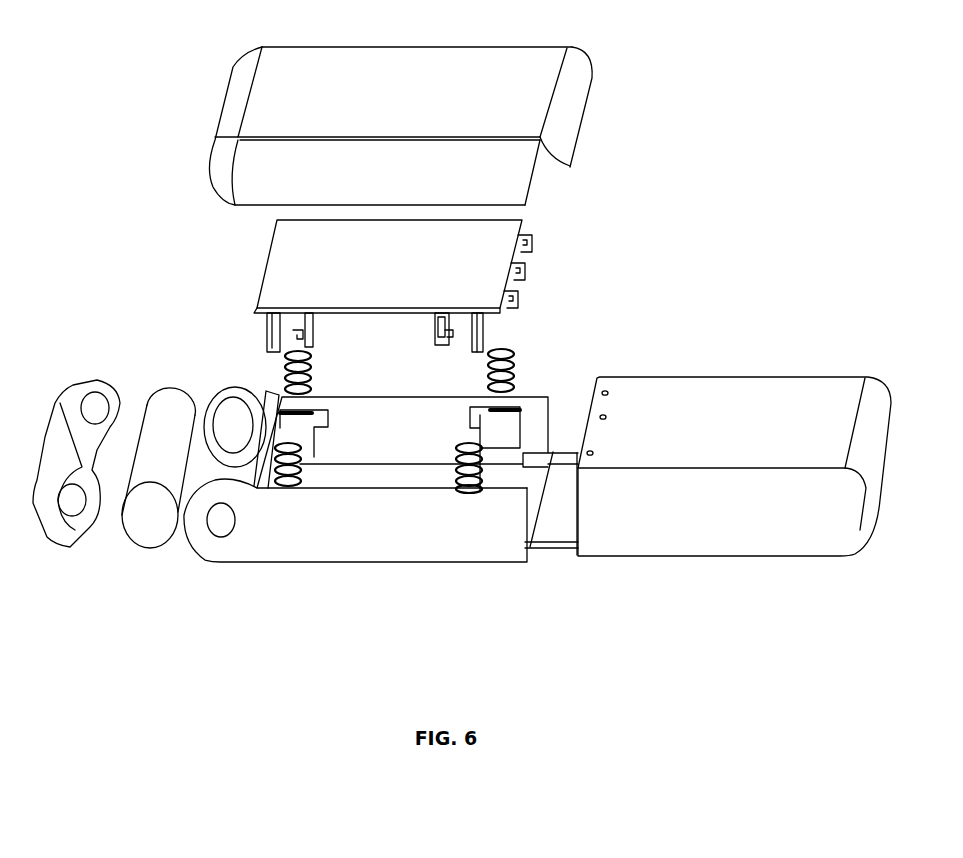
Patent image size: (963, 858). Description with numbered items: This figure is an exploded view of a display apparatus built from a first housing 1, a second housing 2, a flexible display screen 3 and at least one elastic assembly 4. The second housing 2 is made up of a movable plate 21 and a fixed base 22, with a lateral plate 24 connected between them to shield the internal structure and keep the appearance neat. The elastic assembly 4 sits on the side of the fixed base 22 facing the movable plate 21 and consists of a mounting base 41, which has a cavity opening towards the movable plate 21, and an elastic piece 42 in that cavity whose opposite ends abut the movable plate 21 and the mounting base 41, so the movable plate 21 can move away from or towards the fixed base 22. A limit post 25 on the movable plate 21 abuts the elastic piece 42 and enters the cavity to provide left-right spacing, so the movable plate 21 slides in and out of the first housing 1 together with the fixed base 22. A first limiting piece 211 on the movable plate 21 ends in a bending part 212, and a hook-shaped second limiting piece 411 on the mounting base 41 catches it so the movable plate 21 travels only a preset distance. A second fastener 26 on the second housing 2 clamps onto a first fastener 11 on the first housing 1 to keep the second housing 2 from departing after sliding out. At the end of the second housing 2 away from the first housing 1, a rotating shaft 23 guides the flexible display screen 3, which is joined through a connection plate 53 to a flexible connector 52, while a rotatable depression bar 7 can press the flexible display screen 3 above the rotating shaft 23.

The first housing 1 is at (734, 426).
The first fastener 11 is at (607, 418).
The second housing 2 is at (187, 208).
The movable plate 21 is at (280, 278).
The first limiting piece 211 is at (453, 310).
The bending part 212 is at (440, 346).
The fixed base 22 is at (333, 477).
The rotating shaft 23 is at (178, 452).
The lateral plate 24 is at (302, 540).
The limit post 25 is at (268, 335).
The second fastener 26 is at (531, 236).
The flexible display screen 3 is at (237, 132).
The elastic assembly 4 is at (497, 531).
The mounting base 41 is at (500, 428).
The second limiting piece 411 is at (482, 452).
The elastic piece 42 is at (457, 492).
The flexible connector 52 is at (567, 549).
The connection plate 53 is at (523, 568).
The depression bar 7 is at (83, 463).